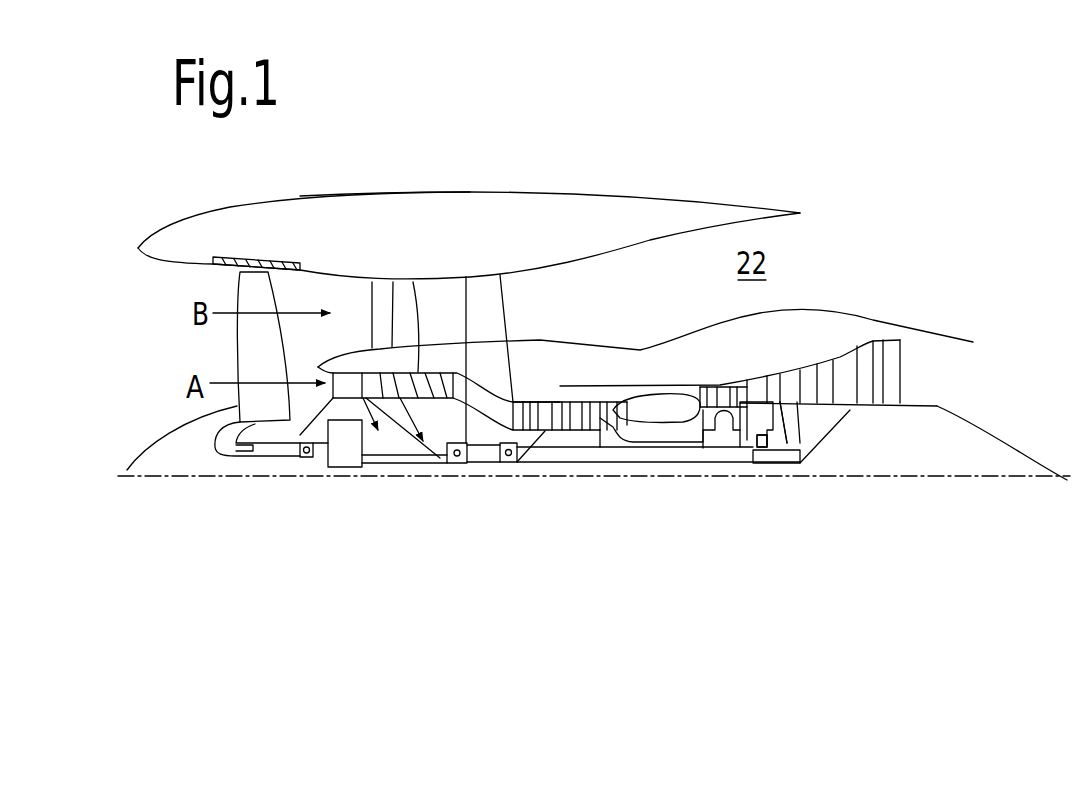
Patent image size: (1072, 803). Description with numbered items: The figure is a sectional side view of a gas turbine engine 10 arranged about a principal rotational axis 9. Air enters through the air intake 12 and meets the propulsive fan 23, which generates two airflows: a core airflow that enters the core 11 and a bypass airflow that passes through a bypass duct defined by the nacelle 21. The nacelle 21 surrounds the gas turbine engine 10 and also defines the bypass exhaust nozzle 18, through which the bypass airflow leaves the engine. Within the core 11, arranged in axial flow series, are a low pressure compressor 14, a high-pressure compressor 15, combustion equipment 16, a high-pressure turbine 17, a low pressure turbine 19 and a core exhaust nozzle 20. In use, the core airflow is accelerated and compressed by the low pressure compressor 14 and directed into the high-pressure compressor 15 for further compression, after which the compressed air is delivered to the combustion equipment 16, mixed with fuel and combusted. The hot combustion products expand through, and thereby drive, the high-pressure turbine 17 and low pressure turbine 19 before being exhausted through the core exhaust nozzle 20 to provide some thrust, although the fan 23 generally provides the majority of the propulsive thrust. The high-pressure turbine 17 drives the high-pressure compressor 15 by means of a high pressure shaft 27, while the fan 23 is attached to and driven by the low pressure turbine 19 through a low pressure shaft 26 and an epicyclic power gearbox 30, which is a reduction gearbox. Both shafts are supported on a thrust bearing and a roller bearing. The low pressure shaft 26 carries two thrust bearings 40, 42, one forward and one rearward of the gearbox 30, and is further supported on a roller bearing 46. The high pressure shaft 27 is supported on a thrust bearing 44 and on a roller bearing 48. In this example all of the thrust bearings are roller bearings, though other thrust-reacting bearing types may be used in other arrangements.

The principal rotational axis 9 is at (858, 479).
The gas turbine engine 10 is at (215, 208).
The core 11 is at (638, 367).
The air intake 12 is at (160, 301).
The low pressure compressor 14 is at (415, 280).
The high-pressure compressor 15 is at (573, 390).
The combustion equipment 16 is at (653, 412).
The high-pressure turbine 17 is at (727, 390).
The bypass exhaust nozzle 18 is at (868, 258).
The low pressure turbine 19 is at (870, 355).
The core exhaust nozzle 20 is at (945, 382).
The nacelle 21 is at (492, 210).
The propulsive fan 23 is at (237, 350).
The low pressure shaft 26 is at (570, 463).
The high pressure shaft 27 is at (612, 450).
The epicyclic power gearbox 30 is at (346, 467).
The thrust bearing 40 is at (300, 456).
The thrust bearing 42 is at (453, 463).
The thrust bearing 44 is at (503, 462).
The roller bearing 46 is at (755, 463).
The roller bearing 48 is at (797, 402).